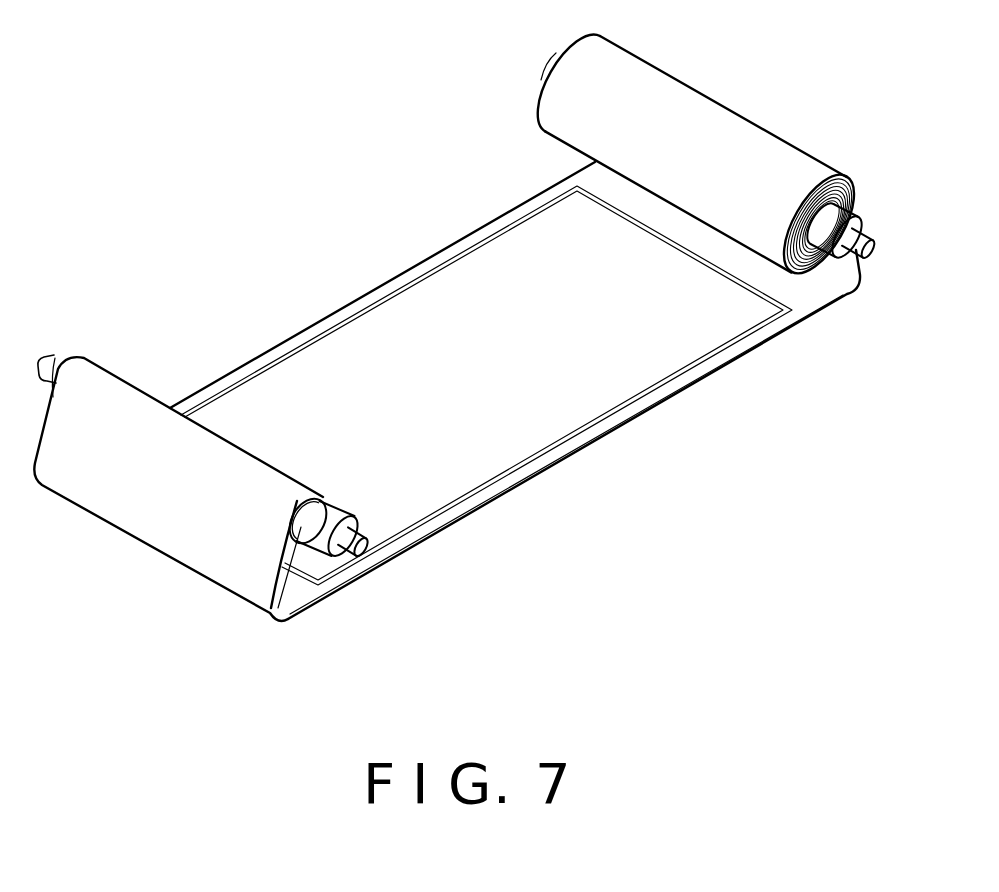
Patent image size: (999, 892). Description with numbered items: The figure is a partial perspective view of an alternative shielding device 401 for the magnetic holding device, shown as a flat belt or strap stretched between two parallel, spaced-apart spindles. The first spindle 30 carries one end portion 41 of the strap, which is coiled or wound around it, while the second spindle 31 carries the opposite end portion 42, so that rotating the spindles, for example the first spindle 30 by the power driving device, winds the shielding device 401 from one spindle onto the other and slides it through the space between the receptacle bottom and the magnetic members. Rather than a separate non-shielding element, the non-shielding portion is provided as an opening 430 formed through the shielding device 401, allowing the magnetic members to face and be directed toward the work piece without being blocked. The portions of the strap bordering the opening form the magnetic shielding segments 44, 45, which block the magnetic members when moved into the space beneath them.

The end portion 41 is at (830, 197).
The first spindle 30 is at (840, 222).
The magnetic shielding segment 44 is at (803, 292).
The shielding device 401 is at (332, 312).
The opening 430 is at (507, 433).
The end portion 42 is at (66, 357).
The second spindle 31 is at (317, 538).
The magnetic shielding segment 45 is at (294, 596).